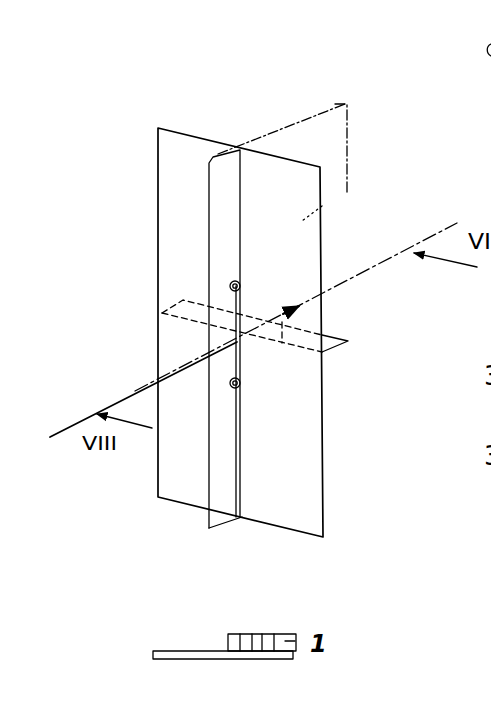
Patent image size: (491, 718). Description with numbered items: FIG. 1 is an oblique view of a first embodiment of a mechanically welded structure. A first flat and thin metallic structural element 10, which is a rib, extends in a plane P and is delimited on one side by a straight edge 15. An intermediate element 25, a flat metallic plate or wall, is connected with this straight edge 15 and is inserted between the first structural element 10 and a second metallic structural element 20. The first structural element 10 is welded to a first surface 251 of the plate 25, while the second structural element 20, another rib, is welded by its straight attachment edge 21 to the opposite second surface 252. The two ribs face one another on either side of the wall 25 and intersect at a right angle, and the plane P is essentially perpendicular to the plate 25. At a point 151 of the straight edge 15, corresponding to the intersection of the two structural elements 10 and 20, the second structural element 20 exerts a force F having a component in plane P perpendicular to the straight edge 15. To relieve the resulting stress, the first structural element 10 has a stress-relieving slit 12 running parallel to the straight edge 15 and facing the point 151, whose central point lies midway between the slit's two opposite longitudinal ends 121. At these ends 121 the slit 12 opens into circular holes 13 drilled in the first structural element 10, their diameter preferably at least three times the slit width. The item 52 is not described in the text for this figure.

The first structural element 10 is at (226, 166).
The stress-relieving slit 12 is at (102, 410).
The longitudinal ends of the slit 121 is at (232, 291).
The circular holes 13 is at (238, 279).
The straight edge 15 is at (240, 198).
The point of force application 151 is at (242, 336).
The second structural element 20 is at (350, 328).
The straight attachment edge 21 is at (322, 278).
The intermediate element 25 is at (164, 155).
The first surface 251 is at (182, 200).
The second surface 252 is at (322, 207).
The stop 52 is at (490, 166).
The plane P is at (325, 127).
The force F is at (302, 320).